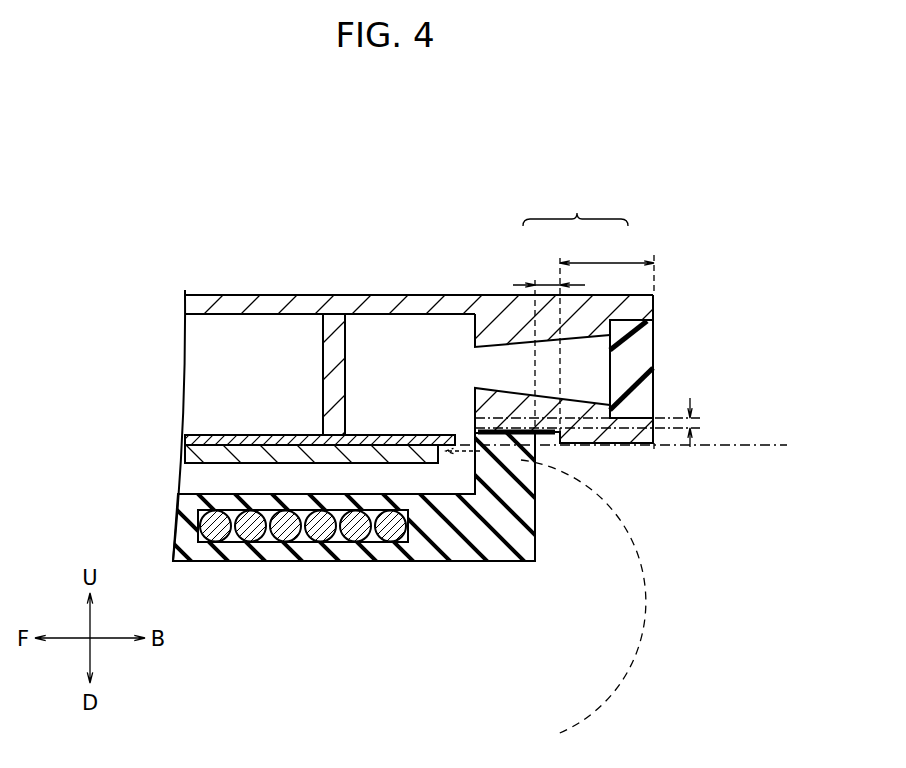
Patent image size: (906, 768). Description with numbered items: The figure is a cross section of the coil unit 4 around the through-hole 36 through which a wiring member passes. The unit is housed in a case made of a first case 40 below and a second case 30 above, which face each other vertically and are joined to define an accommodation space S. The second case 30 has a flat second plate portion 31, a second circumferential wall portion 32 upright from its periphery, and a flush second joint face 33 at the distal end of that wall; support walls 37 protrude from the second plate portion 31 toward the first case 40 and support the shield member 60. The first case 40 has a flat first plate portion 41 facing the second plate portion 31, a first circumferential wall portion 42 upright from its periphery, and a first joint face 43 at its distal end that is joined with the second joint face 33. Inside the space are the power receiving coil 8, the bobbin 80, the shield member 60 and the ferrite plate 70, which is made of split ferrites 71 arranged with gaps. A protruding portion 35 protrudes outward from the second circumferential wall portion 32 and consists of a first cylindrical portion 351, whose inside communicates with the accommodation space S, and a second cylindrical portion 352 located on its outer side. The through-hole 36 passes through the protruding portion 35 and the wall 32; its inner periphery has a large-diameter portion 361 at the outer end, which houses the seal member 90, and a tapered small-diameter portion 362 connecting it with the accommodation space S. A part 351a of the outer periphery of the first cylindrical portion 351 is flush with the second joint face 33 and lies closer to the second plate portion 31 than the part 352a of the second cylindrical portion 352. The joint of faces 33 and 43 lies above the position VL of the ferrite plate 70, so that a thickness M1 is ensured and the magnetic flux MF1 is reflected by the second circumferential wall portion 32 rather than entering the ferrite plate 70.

The coil unit 4 is at (573, 571).
The second case 30 is at (255, 263).
The second plate portion 31 is at (211, 300).
The second circumferential wall portion 32 is at (502, 327).
The second joint face 33 is at (488, 453).
The protruding portion 35 is at (575, 208).
The first cylindrical portion 351 is at (549, 282).
The second cylindrical portion 352 is at (610, 262).
The part of the outer periphery of the first cylindrical portion 351a is at (548, 440).
The part of the outer periphery of the second cylindrical portion 352a is at (628, 446).
The through-hole 36 is at (683, 369).
The large-diameter portion 361 is at (645, 323).
The small-diameter portion 362 is at (665, 388).
The support wall 37 is at (333, 340).
The first joint face 43 is at (525, 435).
The first case 40 is at (377, 539).
The first plate portion 41 is at (386, 545).
The first circumferential wall portion 42 is at (515, 518).
The shield member 60 is at (210, 440).
The ferrite plate 70 is at (210, 452).
The split ferrite 71 is at (311, 454).
The power receiving coil 8 is at (248, 527).
The bobbin 80 is at (440, 515).
The seal member 90 is at (630, 405).
The accommodation space S is at (378, 328).
The thickness M1 is at (604, 422).
The position of the principal face of the ferrite plate VL is at (745, 448).
The magnetic flux MF1 is at (645, 600).